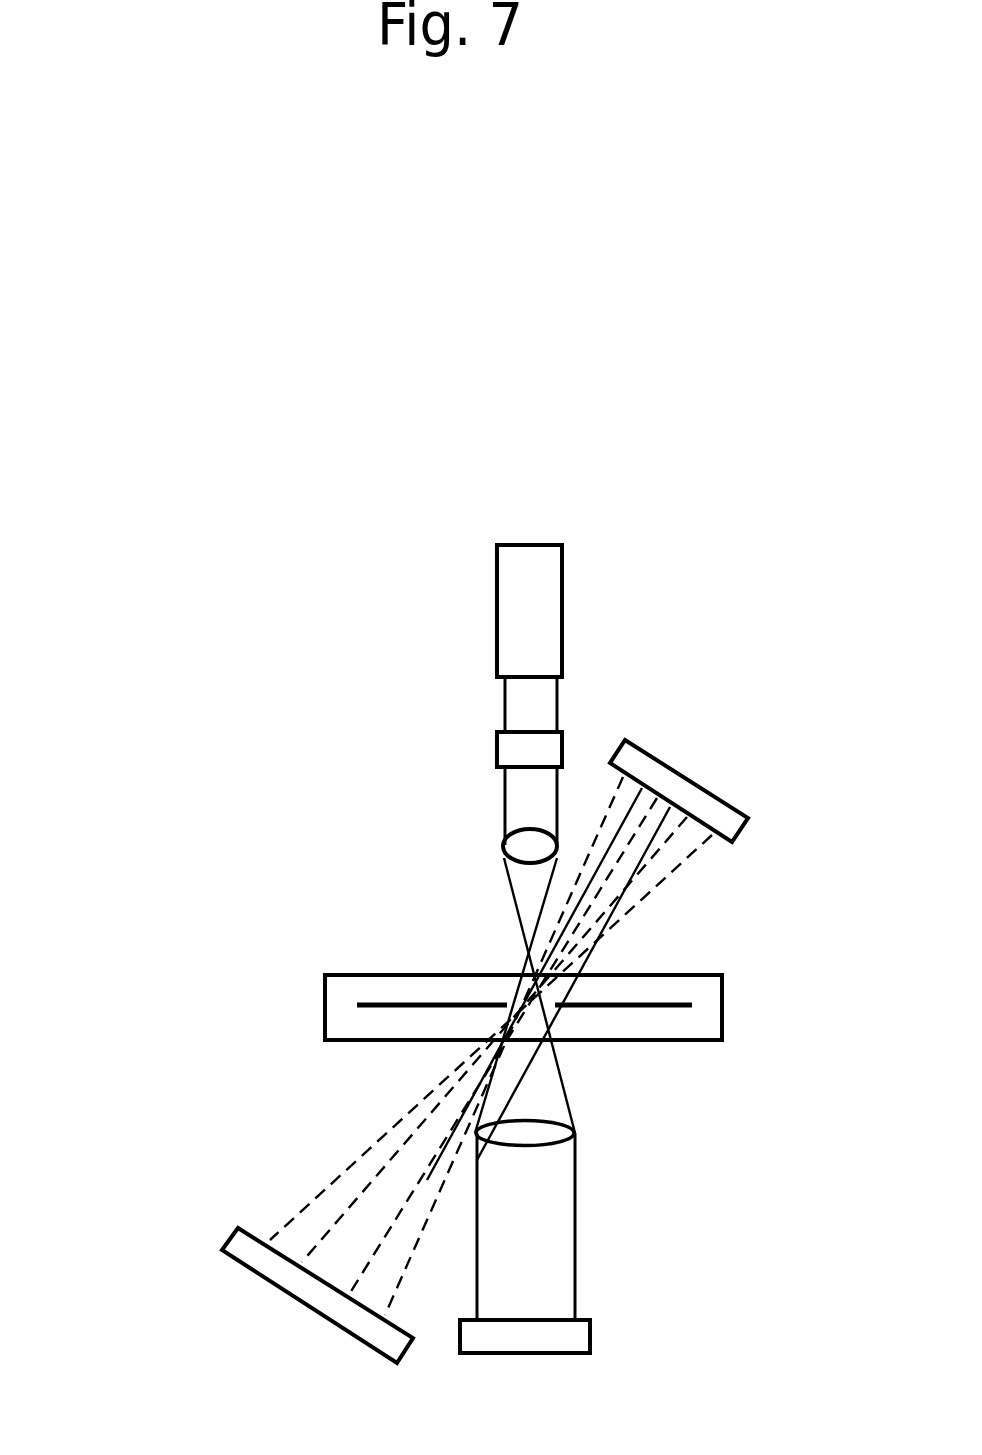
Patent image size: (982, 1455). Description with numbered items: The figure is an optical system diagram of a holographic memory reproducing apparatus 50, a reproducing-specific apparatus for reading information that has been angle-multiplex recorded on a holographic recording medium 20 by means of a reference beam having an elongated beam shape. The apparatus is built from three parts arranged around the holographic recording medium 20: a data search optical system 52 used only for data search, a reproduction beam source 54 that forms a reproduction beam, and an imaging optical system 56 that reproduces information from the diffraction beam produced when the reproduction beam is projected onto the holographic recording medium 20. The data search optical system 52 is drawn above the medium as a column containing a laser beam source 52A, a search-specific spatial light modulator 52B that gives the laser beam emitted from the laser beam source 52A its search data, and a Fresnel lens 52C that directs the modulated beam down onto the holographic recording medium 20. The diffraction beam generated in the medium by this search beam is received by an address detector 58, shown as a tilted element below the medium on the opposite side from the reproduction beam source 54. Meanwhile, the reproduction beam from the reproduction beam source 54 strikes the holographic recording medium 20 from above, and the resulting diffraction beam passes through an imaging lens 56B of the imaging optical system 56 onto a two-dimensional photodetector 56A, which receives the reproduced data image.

The holographic memory reproducing apparatus 50 is at (190, 1145).
The data search optical system 52 is at (334, 571).
The laser beam source 52A is at (497, 587).
The search-specific spatial light modulator 52B is at (497, 740).
The Fresnel lens 52C is at (503, 850).
The reproduction beam source 54 is at (738, 833).
The holographic recording medium 20 is at (722, 1010).
The address detector 58 is at (243, 1228).
The imaging optical system 56 is at (733, 1102).
The imaging lens 56B is at (577, 1131).
The two-dimensional photodetector 56A is at (590, 1335).